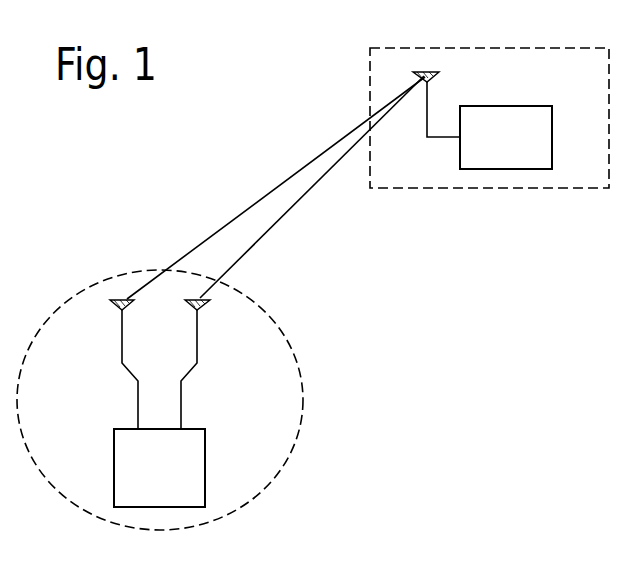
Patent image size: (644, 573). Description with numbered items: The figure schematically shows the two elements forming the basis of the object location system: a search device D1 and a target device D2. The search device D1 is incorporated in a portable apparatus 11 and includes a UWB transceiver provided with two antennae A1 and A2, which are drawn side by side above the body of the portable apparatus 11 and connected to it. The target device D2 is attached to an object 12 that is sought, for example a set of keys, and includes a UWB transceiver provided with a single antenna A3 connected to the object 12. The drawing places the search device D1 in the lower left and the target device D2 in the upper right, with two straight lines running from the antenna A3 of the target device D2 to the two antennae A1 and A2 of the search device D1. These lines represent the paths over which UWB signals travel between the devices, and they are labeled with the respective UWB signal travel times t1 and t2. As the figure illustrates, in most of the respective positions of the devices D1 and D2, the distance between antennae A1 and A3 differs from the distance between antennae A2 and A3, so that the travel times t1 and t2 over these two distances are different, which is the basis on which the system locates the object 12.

The portable apparatus 11 is at (257, 490).
The object 12 is at (540, 188).
The antenna A1 is at (204, 307).
The antenna A2 is at (122, 300).
The antenna A3 is at (428, 72).
The search device D1 is at (255, 418).
The target device D2 is at (434, 192).
The UWB signal travel time t1 is at (312, 187).
The UWB signal travel time t2 is at (276, 188).